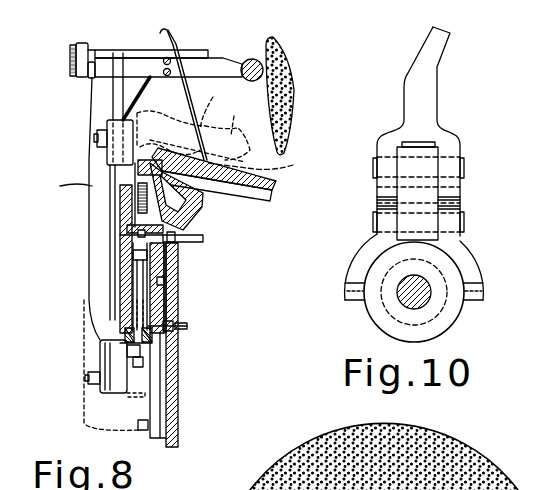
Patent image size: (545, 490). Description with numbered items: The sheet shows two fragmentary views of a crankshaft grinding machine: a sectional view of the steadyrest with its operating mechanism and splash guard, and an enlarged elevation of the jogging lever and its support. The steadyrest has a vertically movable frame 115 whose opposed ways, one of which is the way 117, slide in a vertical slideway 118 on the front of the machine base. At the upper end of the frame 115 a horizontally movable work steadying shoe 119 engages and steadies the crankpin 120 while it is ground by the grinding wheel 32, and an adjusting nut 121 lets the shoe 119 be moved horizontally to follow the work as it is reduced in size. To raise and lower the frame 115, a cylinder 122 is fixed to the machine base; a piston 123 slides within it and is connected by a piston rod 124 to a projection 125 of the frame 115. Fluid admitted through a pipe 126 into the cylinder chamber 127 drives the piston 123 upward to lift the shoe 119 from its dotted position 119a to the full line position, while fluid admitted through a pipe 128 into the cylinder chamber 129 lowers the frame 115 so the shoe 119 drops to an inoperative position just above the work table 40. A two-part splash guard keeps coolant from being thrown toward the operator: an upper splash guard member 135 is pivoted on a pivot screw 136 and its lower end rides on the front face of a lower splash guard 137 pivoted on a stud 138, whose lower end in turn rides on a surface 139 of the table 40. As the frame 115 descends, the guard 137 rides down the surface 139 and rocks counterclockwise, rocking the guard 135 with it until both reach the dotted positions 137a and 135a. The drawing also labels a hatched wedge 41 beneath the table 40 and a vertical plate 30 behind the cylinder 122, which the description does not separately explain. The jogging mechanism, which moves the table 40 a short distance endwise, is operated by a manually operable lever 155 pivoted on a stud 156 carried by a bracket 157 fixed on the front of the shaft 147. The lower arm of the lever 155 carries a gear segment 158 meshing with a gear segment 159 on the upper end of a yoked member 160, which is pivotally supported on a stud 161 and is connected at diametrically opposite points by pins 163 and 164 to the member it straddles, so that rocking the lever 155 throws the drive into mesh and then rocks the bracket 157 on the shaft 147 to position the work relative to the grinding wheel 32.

In FIG. 8, the adjusting nut 121 is at (82, 43).
In FIG. 8, the work steadying shoe 119 is at (233, 63).
In FIG. 8, the crankpin 120 is at (253, 59).
In FIG. 8, the grinding wheel 32 is at (294, 63).
In FIG. 8, the pivot screw 136 is at (163, 58).
In FIG. 8, the stud 138 is at (164, 72).
In FIG. 8, the upper splash guard member 135 is at (161, 33).
In FIG. 8, the splash guard 137 is at (170, 100).
In FIG. 8, the vertically movable frame 115 is at (89, 253).
In FIG. 8, the way 117 is at (110, 297).
In FIG. 8, the cylinder chamber 129 is at (125, 232).
In FIG. 8, the work table 40 is at (270, 190).
In FIG. 8, the conical hub 41 is at (197, 210).
In FIG. 8, the dotted line position of upper splash guard 135a is at (217, 105).
In FIG. 8, the dotted line position of steadyrest shoe 119a is at (230, 117).
In FIG. 8, the surface 139 is at (233, 160).
In FIG. 8, the dotted line position of splash guard 137a is at (268, 162).
In FIG. 8, the pipe 128 is at (187, 235).
In FIG. 8, the cylinder chamber 127 is at (138, 273).
In FIG. 8, the piston 123 is at (165, 250).
In FIG. 8, the piston rod 124 is at (160, 272).
In FIG. 8, the cylinder 122 is at (167, 297).
In FIG. 8, the mounting plate 30 is at (175, 397).
In FIG. 8, the pipe 126 is at (187, 327).
In FIG. 8, the projection 125 is at (143, 353).
In FIG. 8, the vertical slideway 118 is at (100, 347).
In FIG. 10, the manually operable lever 155 is at (440, 60).
In FIG. 10, the stud 156 is at (462, 155).
In FIG. 10, the gear segment 158 is at (457, 193).
In FIG. 10, the gear segment 159 is at (457, 208).
In FIG. 10, the stud 161 is at (464, 220).
In FIG. 10, the yoked member 160 is at (468, 257).
In FIG. 10, the bracket 157 is at (370, 318).
In FIG. 10, the shaft 147 is at (433, 300).
In FIG. 10, the pin 163 is at (345, 290).
In FIG. 10, the pin 164 is at (483, 293).